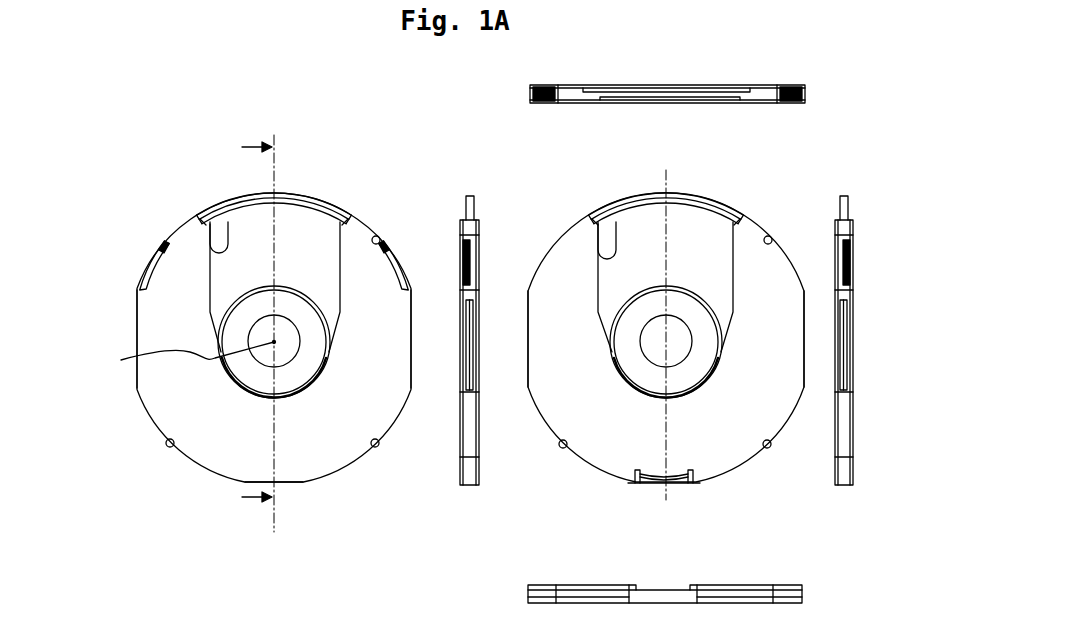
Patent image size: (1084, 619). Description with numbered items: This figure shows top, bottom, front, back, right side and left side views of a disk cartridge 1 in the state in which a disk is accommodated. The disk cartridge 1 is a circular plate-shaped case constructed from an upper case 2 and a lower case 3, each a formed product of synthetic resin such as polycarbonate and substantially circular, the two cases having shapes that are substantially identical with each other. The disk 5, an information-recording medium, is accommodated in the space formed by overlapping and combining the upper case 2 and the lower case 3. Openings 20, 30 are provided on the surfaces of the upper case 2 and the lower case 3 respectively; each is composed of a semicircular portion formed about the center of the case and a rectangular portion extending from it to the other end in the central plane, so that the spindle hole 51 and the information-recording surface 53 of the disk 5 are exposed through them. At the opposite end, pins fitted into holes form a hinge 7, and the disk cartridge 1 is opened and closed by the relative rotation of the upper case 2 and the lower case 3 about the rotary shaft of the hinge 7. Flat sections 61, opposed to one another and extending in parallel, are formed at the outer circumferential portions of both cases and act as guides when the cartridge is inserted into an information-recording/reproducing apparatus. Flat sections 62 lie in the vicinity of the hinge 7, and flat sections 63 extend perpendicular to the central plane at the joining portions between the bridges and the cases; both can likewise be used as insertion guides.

The disk cartridge 1 is at (478, 330).
The upper case 2 is at (675, 338).
The lower case 3 is at (257, 331).
The disk 5 is at (288, 165).
The hinge 7 is at (679, 516).
The opening 20 is at (614, 222).
The opening 30 is at (216, 222).
The spindle hole 51 is at (279, 411).
The information-recording surface 53 is at (290, 163).
The flat sections 61 is at (467, 385).
The flat sections 62 is at (443, 521).
The flat sections 63 is at (467, 177).